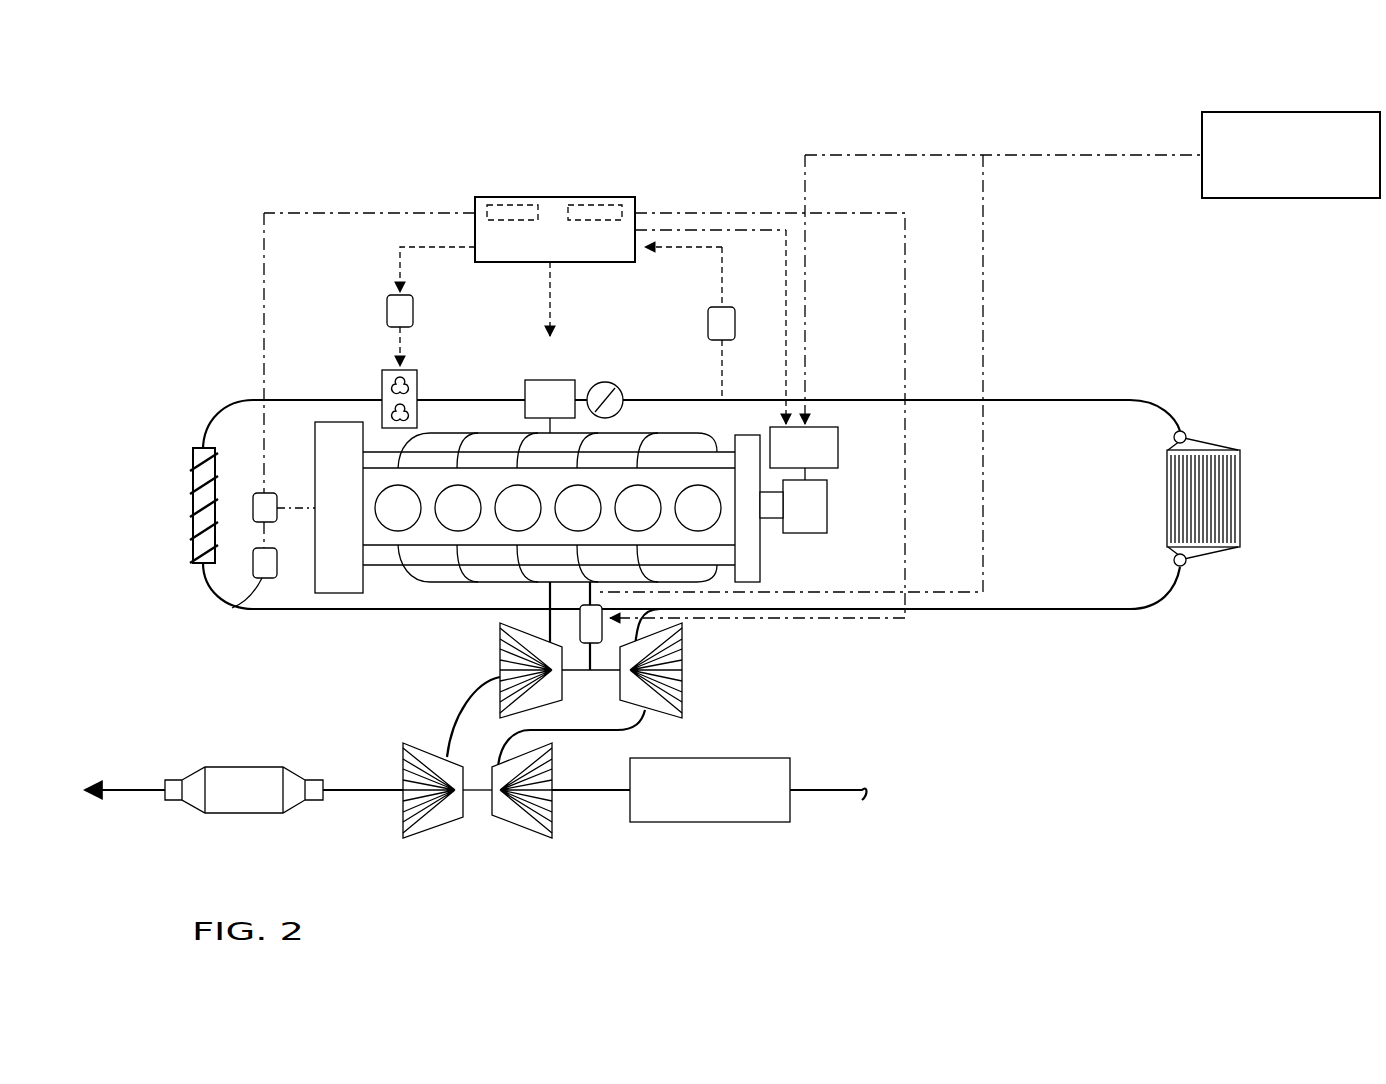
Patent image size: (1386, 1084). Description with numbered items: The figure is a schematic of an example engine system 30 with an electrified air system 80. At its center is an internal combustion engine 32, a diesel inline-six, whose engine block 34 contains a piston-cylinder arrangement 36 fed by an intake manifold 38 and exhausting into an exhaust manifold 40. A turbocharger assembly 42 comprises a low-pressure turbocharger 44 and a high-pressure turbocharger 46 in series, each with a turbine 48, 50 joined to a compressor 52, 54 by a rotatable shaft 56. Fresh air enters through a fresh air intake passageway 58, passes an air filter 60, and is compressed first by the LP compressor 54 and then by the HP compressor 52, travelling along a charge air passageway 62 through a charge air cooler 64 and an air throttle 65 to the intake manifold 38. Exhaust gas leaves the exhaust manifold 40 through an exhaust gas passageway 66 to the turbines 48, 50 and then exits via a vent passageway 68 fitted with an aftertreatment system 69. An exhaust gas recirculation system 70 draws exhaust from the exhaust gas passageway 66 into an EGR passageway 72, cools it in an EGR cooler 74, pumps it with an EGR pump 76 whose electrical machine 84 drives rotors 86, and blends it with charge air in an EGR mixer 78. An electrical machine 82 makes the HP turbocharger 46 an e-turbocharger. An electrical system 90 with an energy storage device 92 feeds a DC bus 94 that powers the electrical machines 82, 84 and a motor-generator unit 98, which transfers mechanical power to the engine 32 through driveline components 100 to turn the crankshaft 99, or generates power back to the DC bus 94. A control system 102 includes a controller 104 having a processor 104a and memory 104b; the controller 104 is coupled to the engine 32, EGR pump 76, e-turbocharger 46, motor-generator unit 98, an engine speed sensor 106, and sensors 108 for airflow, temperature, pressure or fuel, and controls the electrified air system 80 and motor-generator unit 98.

The engine system 30 is at (1175, 652).
The internal combustion engine 32 is at (716, 443).
The engine block 34 is at (328, 422).
The piston-cylinder arrangement 36 is at (390, 502).
The intake manifold 38 is at (457, 428).
The exhaust manifold 40 is at (410, 590).
The turbocharger assembly 42 is at (385, 692).
The low-pressure turbocharger 44 is at (450, 862).
The high-pressure turbocharger 46 is at (718, 685).
The high-pressure turbine 48 is at (500, 648).
The low-pressure turbine 50 is at (403, 813).
The high-pressure compressor 52 is at (685, 697).
The low-pressure compressor 54 is at (518, 832).
The rotatable shaft 56 is at (573, 672).
The fresh air intake passageway 58 is at (588, 792).
The air filter 60 is at (710, 822).
The charge air passageway 62 is at (745, 400).
The charge air cooler 64 is at (1242, 494).
The air throttle 65 is at (605, 382).
The exhaust gas passageway 66 is at (547, 622).
The vent passageway 68 is at (360, 792).
The aftertreatment system 69 is at (243, 813).
The exhaust gas recirculation system 70 is at (185, 430).
The EGR passageway 72 is at (255, 611).
The EGR cooler 74 is at (192, 478).
The EGR pump 76 is at (417, 392).
The EGR mixer 78 is at (548, 379).
The electrified air system 80 is at (360, 305).
The electrical machine 82 is at (602, 620).
The electrical machine 84 is at (413, 312).
The rotors 86 is at (392, 380).
The electrical system 90 is at (1248, 85).
The energy storage device 92 is at (1293, 199).
The DC bus 94 is at (805, 186).
The electric motor-generator unit 98 is at (838, 447).
The crankshaft 99 is at (788, 528).
The driveline component 100 is at (855, 535).
The control system 102 is at (648, 183).
The controller 104 is at (552, 197).
The processor 104a is at (507, 220).
The memory 104b is at (603, 220).
The engine speed sensor 106 is at (253, 500).
The sensor 108 is at (230, 608).